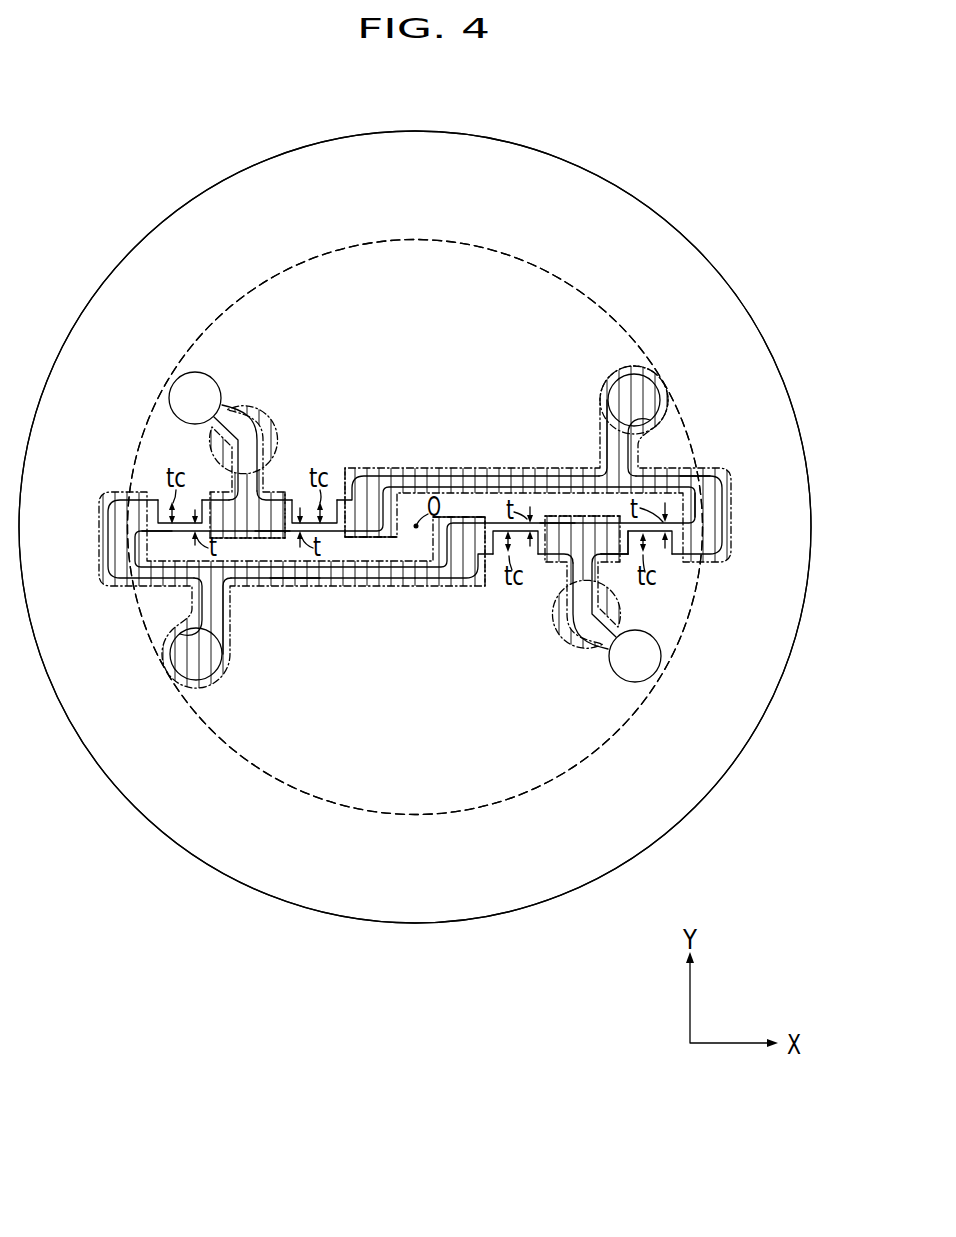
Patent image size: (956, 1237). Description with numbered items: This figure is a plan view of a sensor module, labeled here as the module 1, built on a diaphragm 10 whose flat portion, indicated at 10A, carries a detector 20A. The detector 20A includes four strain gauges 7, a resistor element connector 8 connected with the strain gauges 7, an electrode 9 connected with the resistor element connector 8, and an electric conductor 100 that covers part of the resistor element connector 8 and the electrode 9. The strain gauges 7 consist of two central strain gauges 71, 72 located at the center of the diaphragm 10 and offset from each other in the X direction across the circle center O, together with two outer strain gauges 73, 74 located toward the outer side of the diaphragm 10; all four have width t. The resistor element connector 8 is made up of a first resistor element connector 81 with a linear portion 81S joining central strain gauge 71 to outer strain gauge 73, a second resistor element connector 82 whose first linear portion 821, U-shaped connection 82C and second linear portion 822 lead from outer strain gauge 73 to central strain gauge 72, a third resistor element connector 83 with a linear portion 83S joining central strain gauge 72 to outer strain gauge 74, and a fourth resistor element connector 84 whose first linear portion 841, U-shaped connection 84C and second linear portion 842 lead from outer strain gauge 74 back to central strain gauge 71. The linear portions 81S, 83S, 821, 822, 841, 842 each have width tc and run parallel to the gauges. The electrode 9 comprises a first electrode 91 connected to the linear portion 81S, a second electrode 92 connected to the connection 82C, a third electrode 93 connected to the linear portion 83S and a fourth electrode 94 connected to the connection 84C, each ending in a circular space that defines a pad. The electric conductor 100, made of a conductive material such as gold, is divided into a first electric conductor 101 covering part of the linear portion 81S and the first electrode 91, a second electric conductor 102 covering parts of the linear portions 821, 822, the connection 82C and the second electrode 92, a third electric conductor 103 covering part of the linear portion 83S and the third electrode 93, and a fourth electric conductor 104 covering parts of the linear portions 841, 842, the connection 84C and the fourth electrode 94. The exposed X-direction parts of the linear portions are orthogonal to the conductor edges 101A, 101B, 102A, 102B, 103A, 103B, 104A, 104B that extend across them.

The physical quantity sensor 1 is at (696, 146).
The strain gauge 7 is at (419, 536).
The resistor element connector 8 is at (402, 475).
The electrode 9 is at (658, 365).
The diaphragm 10 is at (243, 172).
The principal surface of substrate 10A is at (414, 242).
The detector 20A is at (520, 296).
The central strain gauge 71 is at (301, 506).
The central strain gauge 72 is at (518, 542).
The outer strain gauge 73 is at (182, 533).
The outer strain gauge 74 is at (660, 553).
The first resistor element connector 81 is at (280, 498).
The linear portion 81S is at (270, 550).
The second resistor element connector 82 is at (385, 580).
The connection 82C is at (292, 578).
The third resistor element connector 83 is at (548, 558).
The linear portion 83S is at (546, 522).
The fourth resistor element connector 84 is at (725, 500).
The connection 84C is at (695, 467).
The first electrode 91 is at (240, 414).
The second electrode 92 is at (226, 652).
The third electrode 93 is at (612, 670).
The fourth electrode 94 is at (606, 404).
The electric conductor 100 is at (441, 466).
The first electric conductor 101 is at (190, 364).
The edge 101A is at (283, 490).
The edge 101B is at (204, 496).
The second electric conductor 102 is at (205, 688).
The edge 102A is at (150, 522).
The edge 102B is at (491, 520).
The third electric conductor 103 is at (632, 690).
The edge 103A is at (628, 557).
The edge 103B is at (558, 535).
The fourth electric conductor 104 is at (604, 371).
The edge 104A is at (700, 522).
The edge 104B is at (347, 545).
The first linear portion 821 is at (157, 497).
The second linear portion 822 is at (490, 553).
The first linear portion 841 is at (680, 557).
The second linear portion 842 is at (347, 470).